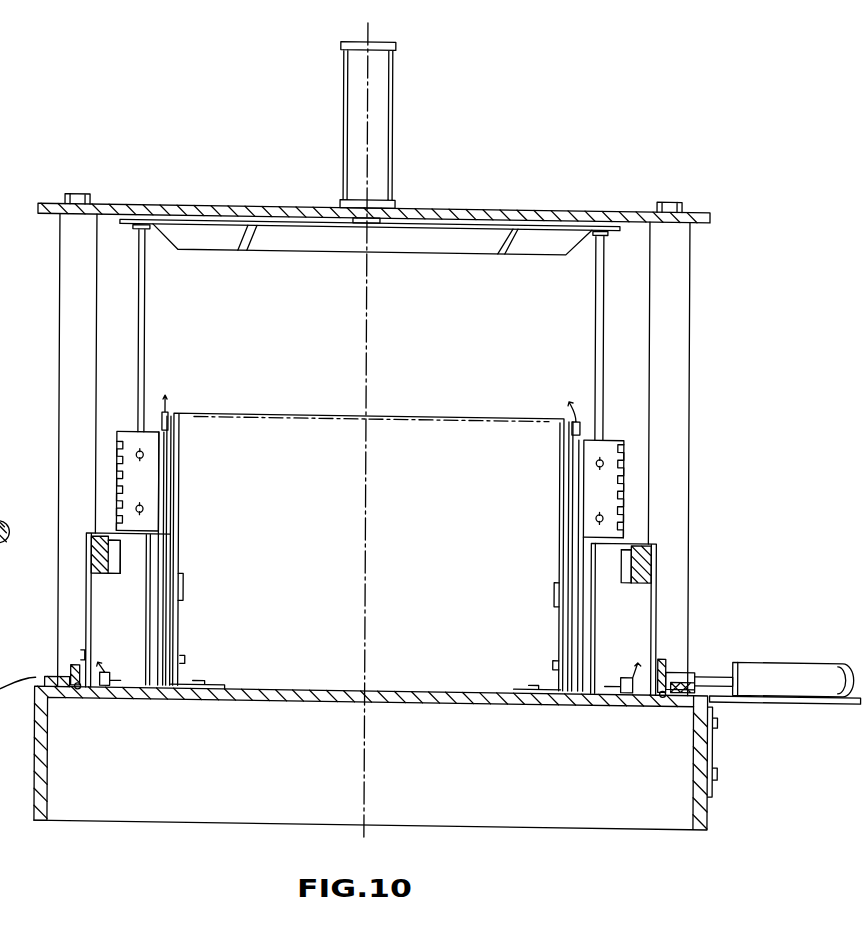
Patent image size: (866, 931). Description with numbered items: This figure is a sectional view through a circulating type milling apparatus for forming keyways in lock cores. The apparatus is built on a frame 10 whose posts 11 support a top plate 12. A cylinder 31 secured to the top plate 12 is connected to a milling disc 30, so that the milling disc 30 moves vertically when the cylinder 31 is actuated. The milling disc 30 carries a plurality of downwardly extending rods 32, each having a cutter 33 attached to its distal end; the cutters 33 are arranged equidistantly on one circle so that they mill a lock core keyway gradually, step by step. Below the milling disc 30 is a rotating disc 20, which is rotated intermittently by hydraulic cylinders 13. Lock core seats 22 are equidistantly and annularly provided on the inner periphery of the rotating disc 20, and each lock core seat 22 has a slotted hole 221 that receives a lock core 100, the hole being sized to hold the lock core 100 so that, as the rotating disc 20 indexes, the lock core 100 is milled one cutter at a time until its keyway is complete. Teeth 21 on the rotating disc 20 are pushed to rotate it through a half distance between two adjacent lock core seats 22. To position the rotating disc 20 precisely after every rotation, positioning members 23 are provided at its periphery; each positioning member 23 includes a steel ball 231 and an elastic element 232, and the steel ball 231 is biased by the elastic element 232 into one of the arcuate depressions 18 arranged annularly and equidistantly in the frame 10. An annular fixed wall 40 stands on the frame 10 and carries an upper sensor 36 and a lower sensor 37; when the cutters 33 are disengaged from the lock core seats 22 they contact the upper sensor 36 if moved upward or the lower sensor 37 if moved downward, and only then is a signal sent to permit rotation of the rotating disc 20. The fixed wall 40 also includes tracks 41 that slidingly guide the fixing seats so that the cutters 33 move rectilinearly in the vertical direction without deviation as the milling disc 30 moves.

The frame 10 is at (706, 807).
The posts 11 is at (60, 314).
The top plate 12 is at (623, 208).
The hydraulic cylinder 13 is at (793, 666).
The arcuate depression 18 is at (82, 696).
The rotating disc 20 is at (88, 609).
The tooth 21 is at (693, 685).
The lock core seat 22 is at (100, 574).
The positioning member 23 is at (78, 672).
The milling disc 30 is at (422, 252).
The cylinder 31 is at (387, 130).
The rod 32 is at (145, 286).
The cutter 33 is at (150, 445).
The upper sensor 36 is at (170, 420).
The lower sensor 37 is at (107, 692).
The annular fixed wall 40 is at (180, 499).
The track 41 is at (155, 693).
The lock core 100 is at (115, 552).
The slotted hole 221 is at (443, 534).
The steel ball 231 is at (370, 742).
The elastic element 232 is at (78, 675).